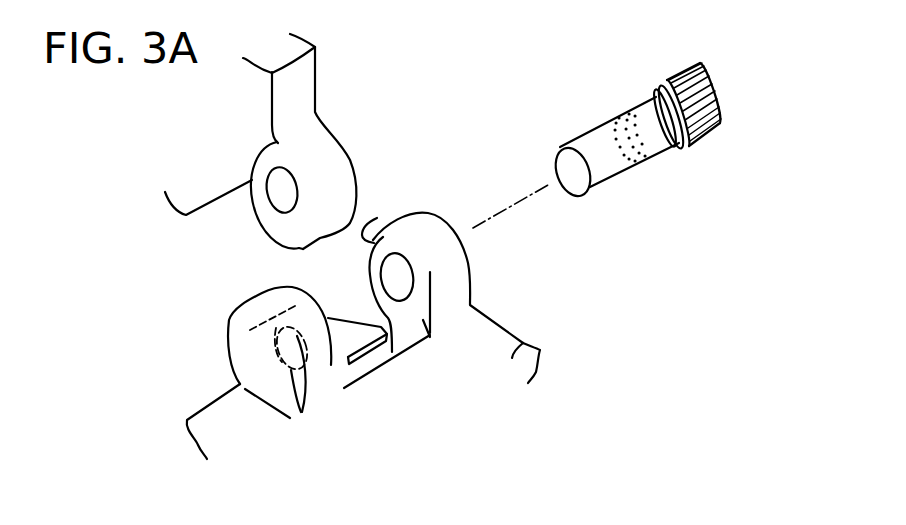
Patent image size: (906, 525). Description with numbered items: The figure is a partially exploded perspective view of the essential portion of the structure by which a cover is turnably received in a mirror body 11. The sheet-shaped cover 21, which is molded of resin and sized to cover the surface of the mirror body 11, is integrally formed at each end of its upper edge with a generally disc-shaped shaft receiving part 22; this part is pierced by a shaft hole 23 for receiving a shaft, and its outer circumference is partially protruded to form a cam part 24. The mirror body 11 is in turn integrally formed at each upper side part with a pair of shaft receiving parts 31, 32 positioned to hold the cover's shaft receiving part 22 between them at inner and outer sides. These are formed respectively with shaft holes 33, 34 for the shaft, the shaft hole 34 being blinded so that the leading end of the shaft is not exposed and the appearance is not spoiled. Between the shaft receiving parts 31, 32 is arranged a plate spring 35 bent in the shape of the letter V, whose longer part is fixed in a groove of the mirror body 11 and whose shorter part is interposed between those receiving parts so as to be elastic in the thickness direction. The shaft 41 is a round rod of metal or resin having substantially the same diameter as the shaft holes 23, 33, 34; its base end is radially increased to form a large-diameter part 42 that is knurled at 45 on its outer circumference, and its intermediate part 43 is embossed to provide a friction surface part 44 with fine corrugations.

The mirror body 11 is at (540, 348).
The cover 21 is at (297, 110).
The shaft receiving part 22 is at (327, 157).
The shaft hole 23 is at (285, 196).
The cam part 24 is at (302, 226).
The shaft receiving part 31 is at (450, 287).
The shaft receiving part 32 is at (238, 348).
The shaft hole 33 is at (402, 283).
The shaft hole 34 is at (301, 412).
The plate spring 35 is at (353, 335).
The shaft 41 is at (628, 129).
The large-diameter part 42 is at (721, 79).
The intermediate part 43 is at (600, 152).
The friction surface part 44 is at (640, 165).
The knurl 45 is at (667, 80).